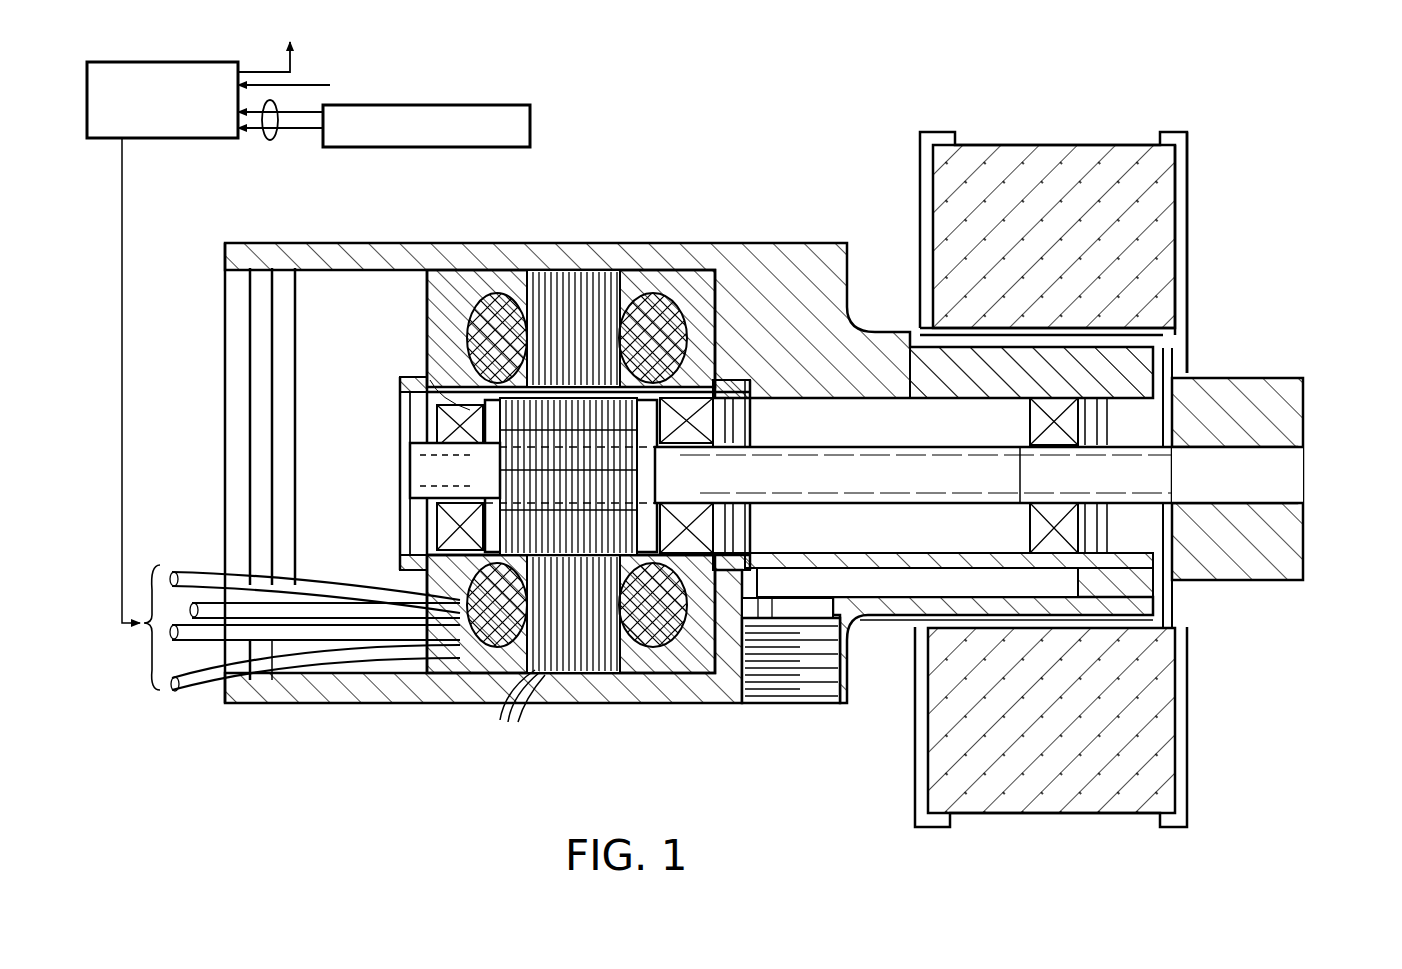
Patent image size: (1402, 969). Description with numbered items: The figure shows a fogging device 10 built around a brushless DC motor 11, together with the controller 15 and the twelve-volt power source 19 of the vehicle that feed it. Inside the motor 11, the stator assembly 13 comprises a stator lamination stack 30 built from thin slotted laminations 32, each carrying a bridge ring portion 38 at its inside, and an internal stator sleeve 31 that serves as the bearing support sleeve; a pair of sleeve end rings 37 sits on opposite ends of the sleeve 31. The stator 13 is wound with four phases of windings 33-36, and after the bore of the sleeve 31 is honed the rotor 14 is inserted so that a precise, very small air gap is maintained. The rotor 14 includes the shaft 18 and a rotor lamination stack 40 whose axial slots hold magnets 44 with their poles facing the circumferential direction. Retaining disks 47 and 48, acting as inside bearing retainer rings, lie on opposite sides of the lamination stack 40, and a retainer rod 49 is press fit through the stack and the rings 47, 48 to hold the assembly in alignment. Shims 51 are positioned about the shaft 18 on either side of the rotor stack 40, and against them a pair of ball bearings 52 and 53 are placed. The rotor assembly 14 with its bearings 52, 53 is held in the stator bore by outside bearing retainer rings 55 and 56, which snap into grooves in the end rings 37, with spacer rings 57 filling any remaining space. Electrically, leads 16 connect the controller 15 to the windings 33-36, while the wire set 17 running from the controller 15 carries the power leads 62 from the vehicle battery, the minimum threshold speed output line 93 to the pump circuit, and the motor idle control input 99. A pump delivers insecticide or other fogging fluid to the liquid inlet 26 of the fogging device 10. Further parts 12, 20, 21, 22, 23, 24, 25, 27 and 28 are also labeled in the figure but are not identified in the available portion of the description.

The fogging device 10 is at (797, 800).
The motor 11 is at (395, 333).
The motor housing 12 is at (776, 268).
The stator assembly 13 is at (571, 469).
The rotor 14 is at (450, 470).
The controller 15 is at (165, 140).
The leads 16 is at (125, 524).
The wire set 17 is at (290, 140).
The shaft 18 is at (936, 484).
The power source 19 is at (532, 108).
The pump 20 is at (1118, 443).
The pump body 21 is at (1065, 160).
The pump housing wall 22 is at (1190, 283).
The pump bearing support 23 is at (1290, 396).
The shaft end 24 is at (1300, 475).
The mounting flange 25 is at (1160, 358).
The liquid inlet 26 is at (808, 700).
The fluid passage 27 is at (904, 582).
The pump wall 28 is at (1000, 628).
The stator lamination stack 30 is at (575, 660).
The internal stator sleeve 31 is at (735, 418).
The laminations 32 is at (495, 725).
The windings 33-36 is at (490, 320).
The sleeve end rings 37 is at (752, 380).
The bridge ring portion 38 is at (588, 250).
The rotor lamination stack 40 is at (536, 479).
The magnets 44 is at (606, 475).
The retaining disk 47 is at (800, 474).
The retaining disk 48 is at (445, 425).
The retainer rod 49 is at (392, 462).
The shims 51 is at (705, 395).
The ball bearing 52 is at (450, 374).
The ball bearing 53 is at (705, 525).
The outside bearing retainer ring 55 is at (740, 540).
The outside bearing retainer ring 56 is at (412, 407).
The spacer rings 57 is at (740, 410).
The power leads 62 is at (267, 142).
The minimum threshold speed output line 93 is at (298, 54).
The input 99 is at (328, 92).